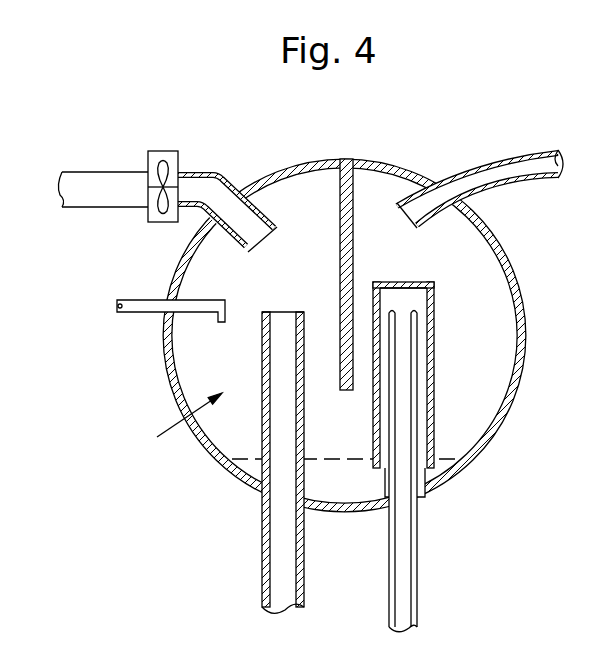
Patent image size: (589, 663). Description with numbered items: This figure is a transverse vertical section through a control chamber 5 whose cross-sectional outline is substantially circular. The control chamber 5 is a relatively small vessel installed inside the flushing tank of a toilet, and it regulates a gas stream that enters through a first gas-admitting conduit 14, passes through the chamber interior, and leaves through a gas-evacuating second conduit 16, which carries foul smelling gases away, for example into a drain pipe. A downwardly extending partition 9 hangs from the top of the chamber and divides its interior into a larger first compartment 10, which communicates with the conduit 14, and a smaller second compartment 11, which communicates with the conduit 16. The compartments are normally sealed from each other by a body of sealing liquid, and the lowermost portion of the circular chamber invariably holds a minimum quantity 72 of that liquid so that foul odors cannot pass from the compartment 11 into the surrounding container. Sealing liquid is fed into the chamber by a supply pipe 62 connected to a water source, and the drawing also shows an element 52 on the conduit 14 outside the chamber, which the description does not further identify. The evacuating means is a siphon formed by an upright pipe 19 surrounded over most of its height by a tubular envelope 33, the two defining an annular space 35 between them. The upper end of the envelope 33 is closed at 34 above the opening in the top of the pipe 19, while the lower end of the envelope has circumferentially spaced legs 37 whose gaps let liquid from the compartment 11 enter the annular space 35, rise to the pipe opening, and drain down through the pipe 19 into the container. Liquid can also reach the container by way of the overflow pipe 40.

The control chamber 5 is at (182, 425).
The partition 9 is at (337, 258).
The first compartment 10 is at (295, 193).
The second compartment 11 is at (377, 197).
The first gas-admitting conduit 14 is at (210, 185).
The second gas-evacuating conduit 16 is at (498, 173).
The upright pipe 19 is at (405, 557).
The tubular envelope 33 is at (435, 393).
The closed upper end of envelope 34 is at (395, 282).
The annular space 35 is at (420, 335).
The legs 37 is at (425, 490).
The overflow pipe 40 is at (283, 557).
The valve 52 is at (162, 163).
The supply pipe 62 is at (148, 305).
The minimum quantity of sealing liquid 72 is at (337, 490).